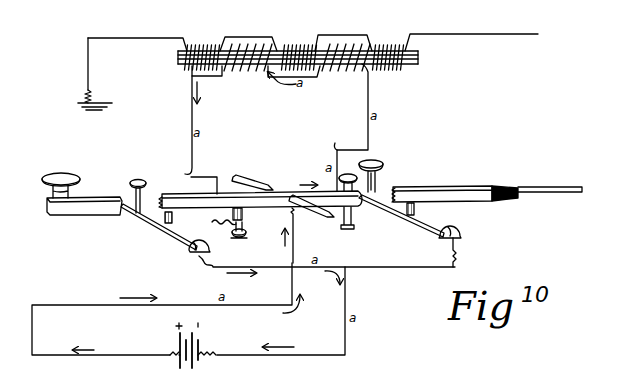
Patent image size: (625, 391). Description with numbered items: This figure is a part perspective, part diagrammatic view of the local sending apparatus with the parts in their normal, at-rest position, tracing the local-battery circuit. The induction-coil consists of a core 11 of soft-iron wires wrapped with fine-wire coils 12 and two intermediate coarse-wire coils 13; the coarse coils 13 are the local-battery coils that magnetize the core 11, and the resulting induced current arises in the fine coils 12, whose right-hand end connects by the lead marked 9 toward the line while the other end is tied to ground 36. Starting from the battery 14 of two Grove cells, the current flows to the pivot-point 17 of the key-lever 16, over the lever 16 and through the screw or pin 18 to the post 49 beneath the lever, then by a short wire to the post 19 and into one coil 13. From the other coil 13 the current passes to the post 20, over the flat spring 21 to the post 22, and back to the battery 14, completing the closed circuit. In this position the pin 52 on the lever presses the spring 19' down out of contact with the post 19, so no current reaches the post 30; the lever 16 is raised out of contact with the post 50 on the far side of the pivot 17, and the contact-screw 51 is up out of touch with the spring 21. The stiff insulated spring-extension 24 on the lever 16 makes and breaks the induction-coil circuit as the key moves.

The line wire 9 is at (489, 47).
The core 11 is at (418, 56).
The fine-wire coils 12 is at (294, 48).
The coarse-wire coils 13 is at (282, 61).
The battery 14 is at (196, 349).
The key-lever 16 is at (452, 184).
The pivot-point 17 is at (272, 188).
The screw or pin 18 is at (357, 207).
The post 19 is at (381, 176).
The spring 19' is at (401, 219).
The post 20 is at (133, 185).
The flat spring 21 is at (162, 239).
The post 22 is at (197, 253).
The spring-extension 24 is at (537, 187).
The post 30 is at (459, 229).
The ground 36 is at (83, 83).
The post 49 is at (345, 228).
The post 50 is at (246, 238).
The contact-screw 51 is at (243, 213).
The pin 52 is at (415, 210).